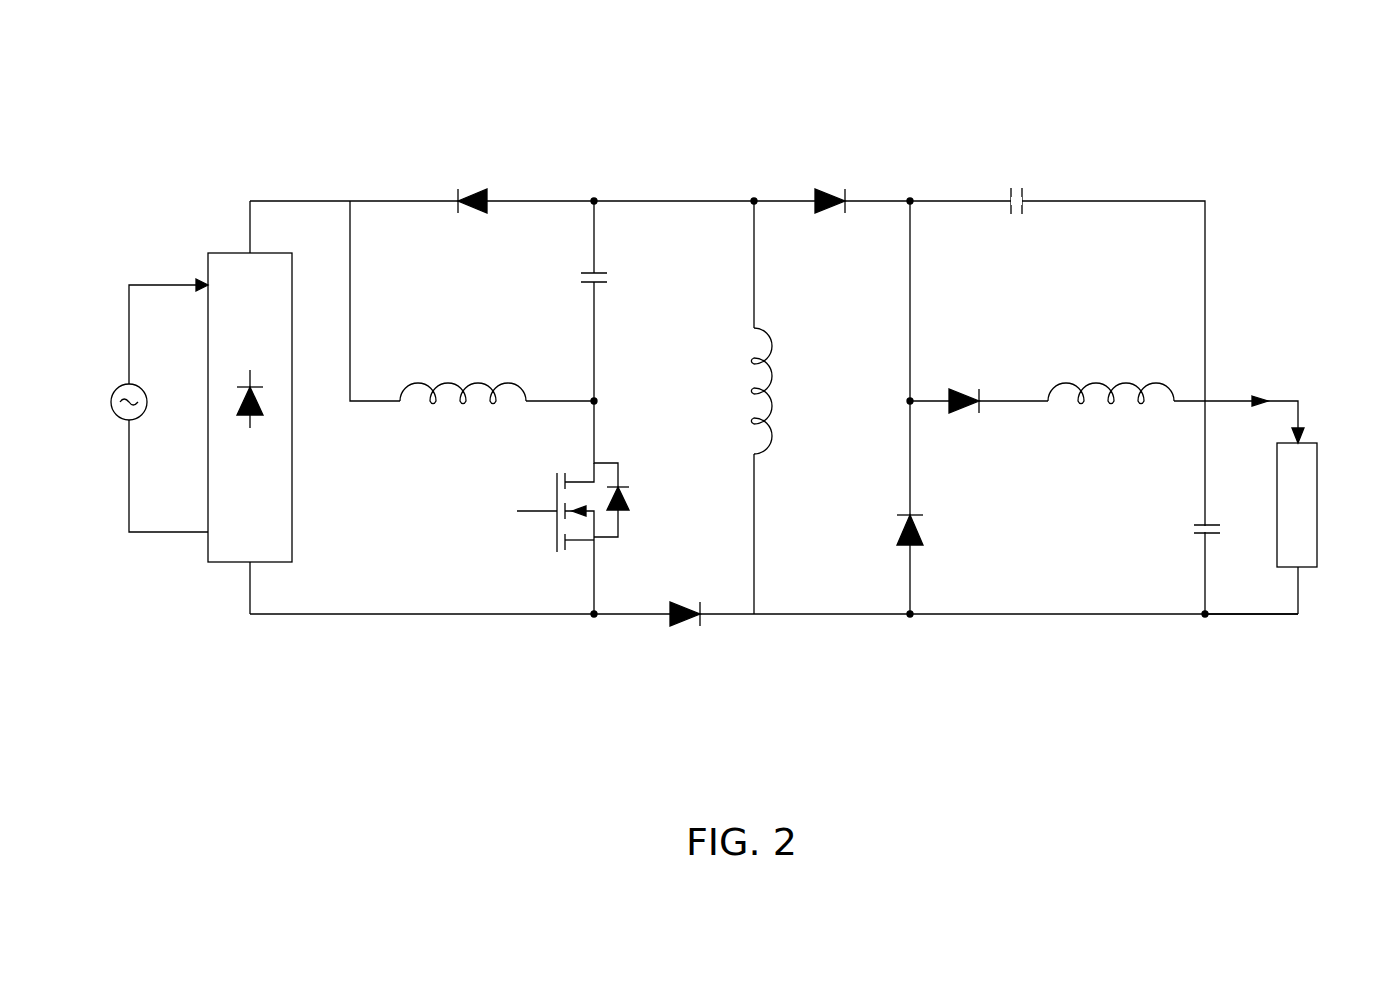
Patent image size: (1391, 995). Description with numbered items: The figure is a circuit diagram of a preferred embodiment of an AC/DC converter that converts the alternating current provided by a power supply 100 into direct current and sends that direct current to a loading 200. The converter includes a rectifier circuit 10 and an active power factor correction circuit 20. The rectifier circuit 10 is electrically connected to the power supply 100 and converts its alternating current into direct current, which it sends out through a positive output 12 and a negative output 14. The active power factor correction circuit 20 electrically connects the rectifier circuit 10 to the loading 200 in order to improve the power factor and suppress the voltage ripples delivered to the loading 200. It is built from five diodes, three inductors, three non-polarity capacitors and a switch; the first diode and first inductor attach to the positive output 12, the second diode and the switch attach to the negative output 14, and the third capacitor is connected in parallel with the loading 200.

The rectifier circuit 10 is at (208, 267).
The positive output 12 is at (248, 229).
The negative output 14 is at (244, 588).
The active power factor correction circuit 20 is at (1225, 168).
The power supply 100 is at (118, 382).
The loading 200 is at (1308, 438).